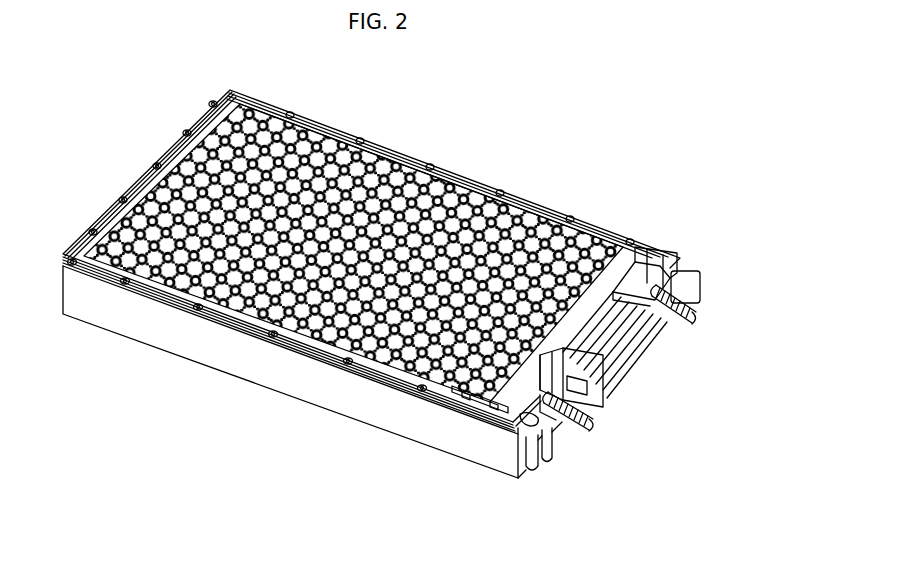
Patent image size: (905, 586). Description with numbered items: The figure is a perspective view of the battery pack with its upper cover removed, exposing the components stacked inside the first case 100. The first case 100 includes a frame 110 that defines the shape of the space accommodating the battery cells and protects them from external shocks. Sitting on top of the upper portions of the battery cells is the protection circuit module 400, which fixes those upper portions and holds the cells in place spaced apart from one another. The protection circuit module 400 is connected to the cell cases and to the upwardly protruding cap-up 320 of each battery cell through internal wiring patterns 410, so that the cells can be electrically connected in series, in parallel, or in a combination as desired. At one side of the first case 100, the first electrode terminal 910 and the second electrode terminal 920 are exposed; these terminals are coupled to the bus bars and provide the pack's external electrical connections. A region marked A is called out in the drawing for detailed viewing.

The first case 100 is at (560, 472).
The frame 110 is at (230, 358).
The cap-up 320 is at (345, 342).
The protection circuit module 400 is at (382, 262).
The internal wiring patterns 410 is at (507, 196).
The first electrode terminal 910 is at (600, 433).
The second electrode terminal 920 is at (704, 324).
The region A is at (459, 388).